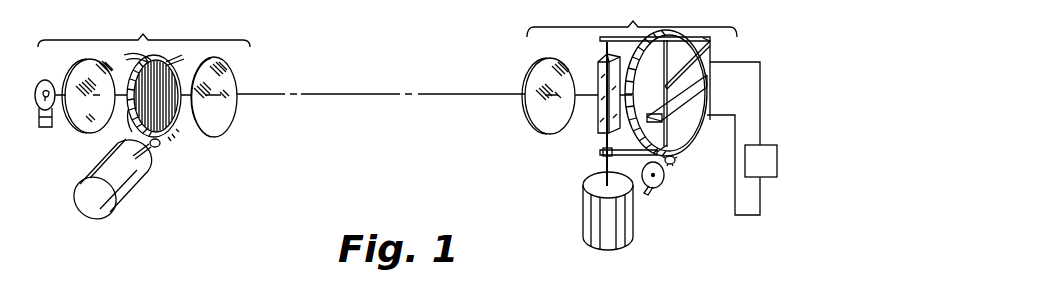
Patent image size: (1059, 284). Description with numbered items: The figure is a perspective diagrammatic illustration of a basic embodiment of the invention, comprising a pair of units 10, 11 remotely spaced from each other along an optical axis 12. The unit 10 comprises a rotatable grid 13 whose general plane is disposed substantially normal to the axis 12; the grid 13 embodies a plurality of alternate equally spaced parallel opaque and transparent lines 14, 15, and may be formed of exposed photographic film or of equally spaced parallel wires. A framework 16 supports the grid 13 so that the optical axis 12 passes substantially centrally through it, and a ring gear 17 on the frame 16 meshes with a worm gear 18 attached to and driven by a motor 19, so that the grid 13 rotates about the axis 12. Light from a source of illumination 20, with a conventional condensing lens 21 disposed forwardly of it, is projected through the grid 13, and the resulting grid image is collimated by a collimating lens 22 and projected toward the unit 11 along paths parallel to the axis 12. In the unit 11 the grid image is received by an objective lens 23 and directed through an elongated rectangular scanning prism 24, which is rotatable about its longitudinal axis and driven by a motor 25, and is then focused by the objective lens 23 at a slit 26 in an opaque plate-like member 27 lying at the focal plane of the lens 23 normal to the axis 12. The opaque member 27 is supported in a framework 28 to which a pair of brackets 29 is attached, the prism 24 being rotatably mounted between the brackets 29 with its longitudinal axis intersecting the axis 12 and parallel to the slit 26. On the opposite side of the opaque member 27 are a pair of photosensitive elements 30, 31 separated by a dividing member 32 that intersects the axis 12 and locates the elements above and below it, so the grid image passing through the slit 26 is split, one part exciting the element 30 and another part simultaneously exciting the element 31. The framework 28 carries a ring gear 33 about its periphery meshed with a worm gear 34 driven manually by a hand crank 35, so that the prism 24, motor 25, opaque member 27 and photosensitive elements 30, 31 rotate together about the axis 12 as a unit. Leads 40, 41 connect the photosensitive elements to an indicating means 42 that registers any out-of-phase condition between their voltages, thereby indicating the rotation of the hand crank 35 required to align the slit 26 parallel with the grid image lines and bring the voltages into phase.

The unit 10 is at (144, 30).
The unit 11 is at (632, 22).
The optical axis 12 is at (347, 95).
The rotatable grid 13 is at (170, 103).
The opaque lines 14 is at (184, 53).
The transparent lines 15 is at (128, 52).
The framework 16 is at (182, 118).
The ring gear 17 is at (128, 126).
The worm gear 18 is at (157, 150).
The motor 19 is at (112, 210).
The source of illumination 20 is at (43, 80).
The condensing lens 21 is at (84, 62).
The collimating lens 22 is at (232, 74).
The objective lens 23 is at (565, 60).
The scanning prism 24 is at (600, 120).
The motor 25 is at (633, 227).
The slit 26 is at (674, 31).
The opaque plate-like member 27 is at (709, 52).
The framework 28 is at (707, 36).
The brackets 29 is at (600, 40).
The photosensitive element 30 is at (711, 70).
The photosensitive element 31 is at (709, 97).
The dividing member 32 is at (672, 126).
The ring gear 33 is at (602, 152).
The worm gear 34 is at (678, 158).
The hand crank 35 is at (665, 177).
The lead 40 is at (760, 62).
The lead 41 is at (742, 215).
The indicating means 42 is at (767, 172).